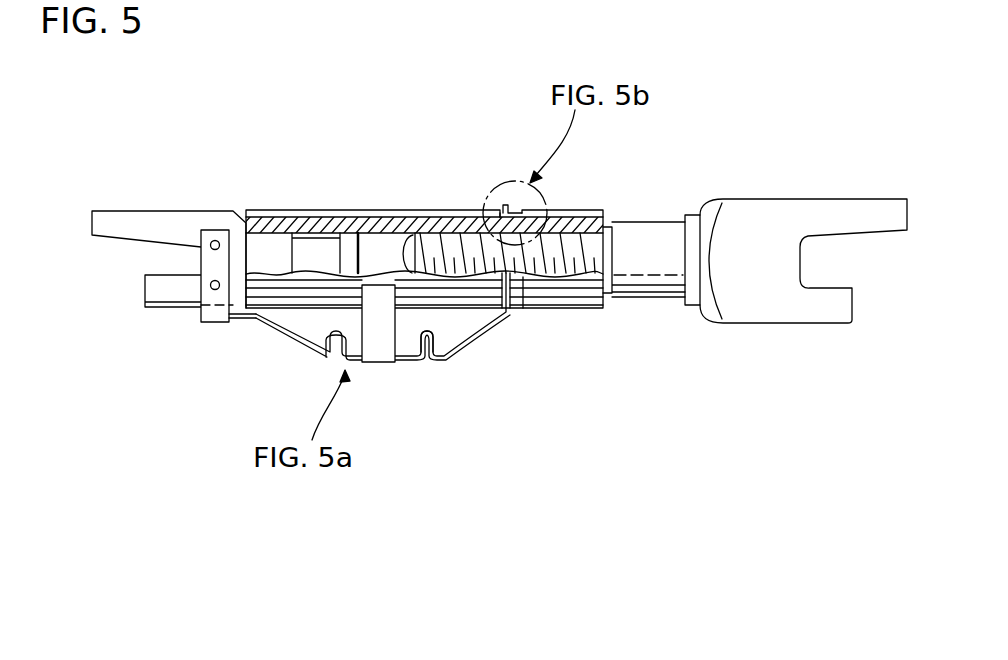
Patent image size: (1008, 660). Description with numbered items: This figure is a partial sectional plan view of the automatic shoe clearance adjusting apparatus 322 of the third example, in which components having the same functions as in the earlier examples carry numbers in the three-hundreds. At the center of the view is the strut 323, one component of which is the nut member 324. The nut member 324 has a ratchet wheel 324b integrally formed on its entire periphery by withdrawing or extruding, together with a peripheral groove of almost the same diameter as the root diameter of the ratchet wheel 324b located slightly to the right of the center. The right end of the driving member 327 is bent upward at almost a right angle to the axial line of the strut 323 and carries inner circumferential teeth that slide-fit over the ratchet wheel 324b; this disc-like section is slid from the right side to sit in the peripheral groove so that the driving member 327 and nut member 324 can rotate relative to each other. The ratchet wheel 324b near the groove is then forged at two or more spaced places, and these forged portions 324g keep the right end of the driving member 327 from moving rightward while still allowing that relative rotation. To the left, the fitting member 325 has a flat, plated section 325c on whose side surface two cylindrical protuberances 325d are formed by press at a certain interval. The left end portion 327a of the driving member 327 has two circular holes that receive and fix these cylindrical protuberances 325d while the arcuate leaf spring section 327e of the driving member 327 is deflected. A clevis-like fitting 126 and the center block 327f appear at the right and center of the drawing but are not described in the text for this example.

The clevis / fork joint 126 is at (773, 199).
The automatic shoe clearance adjusting apparatus 322 is at (452, 380).
The strut 323 is at (392, 210).
The nut member 324 is at (358, 210).
The ratchet wheel 324b is at (613, 190).
The forged portions 324g is at (513, 311).
The fitting member 325 is at (180, 209).
The flat, plated section 325c is at (175, 307).
The cylindrical protuberances 325d is at (210, 285).
The driving member 327 is at (468, 345).
The left end portion 327a is at (222, 312).
The arcuate leaf spring section 327e is at (417, 360).
The center block of spring seat 327f is at (378, 347).